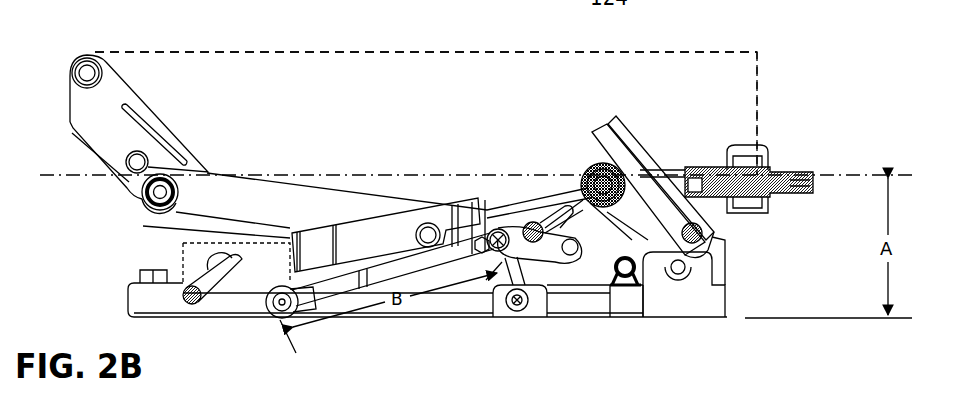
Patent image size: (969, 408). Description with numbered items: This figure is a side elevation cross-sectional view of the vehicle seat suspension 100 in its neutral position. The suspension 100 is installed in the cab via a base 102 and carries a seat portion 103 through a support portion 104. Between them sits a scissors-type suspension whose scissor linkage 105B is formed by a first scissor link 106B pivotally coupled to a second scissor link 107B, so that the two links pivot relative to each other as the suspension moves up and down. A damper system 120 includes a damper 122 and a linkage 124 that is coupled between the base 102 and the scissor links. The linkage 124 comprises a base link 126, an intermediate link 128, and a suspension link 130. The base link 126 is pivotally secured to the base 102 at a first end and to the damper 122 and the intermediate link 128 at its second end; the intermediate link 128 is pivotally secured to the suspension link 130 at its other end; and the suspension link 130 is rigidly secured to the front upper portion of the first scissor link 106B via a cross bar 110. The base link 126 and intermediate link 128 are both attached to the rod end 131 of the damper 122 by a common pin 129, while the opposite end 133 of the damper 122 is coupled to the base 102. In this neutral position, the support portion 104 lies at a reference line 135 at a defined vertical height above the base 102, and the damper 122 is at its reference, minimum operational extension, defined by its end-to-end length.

The suspension 100 is at (118, 40).
The base 102 is at (162, 313).
The seat portion 103 is at (758, 103).
The support portion 104 is at (555, 178).
The scissor linkage 105B is at (283, 175).
The first scissor link 106B is at (463, 223).
The second scissor link 107B is at (234, 208).
The cross bar 110 is at (520, 248).
The damper system 120 is at (528, 160).
The damper 122 is at (380, 277).
The linkage 124 is at (535, 302).
The base link 126 is at (507, 262).
The intermediate link 128 is at (535, 255).
The common pin 129 is at (498, 240).
The suspension link 130 is at (595, 208).
The rod end 131 is at (482, 245).
The opposite end 133 is at (275, 312).
The reference line 135 is at (828, 175).